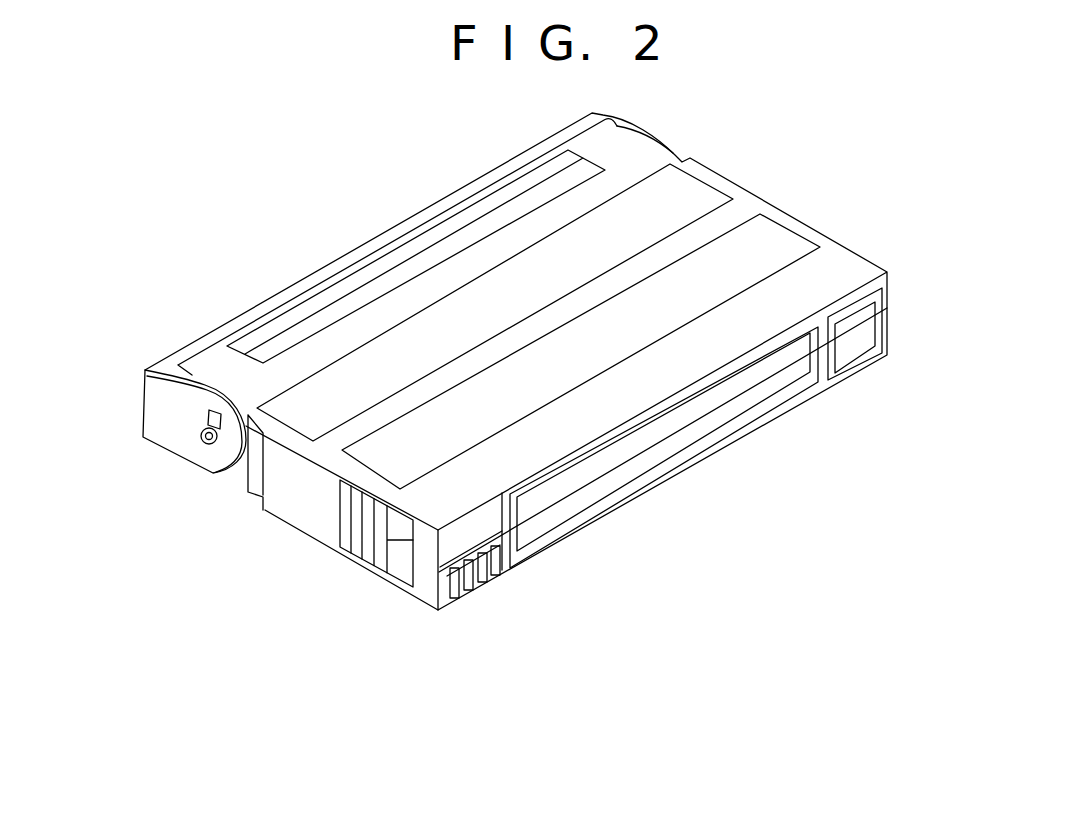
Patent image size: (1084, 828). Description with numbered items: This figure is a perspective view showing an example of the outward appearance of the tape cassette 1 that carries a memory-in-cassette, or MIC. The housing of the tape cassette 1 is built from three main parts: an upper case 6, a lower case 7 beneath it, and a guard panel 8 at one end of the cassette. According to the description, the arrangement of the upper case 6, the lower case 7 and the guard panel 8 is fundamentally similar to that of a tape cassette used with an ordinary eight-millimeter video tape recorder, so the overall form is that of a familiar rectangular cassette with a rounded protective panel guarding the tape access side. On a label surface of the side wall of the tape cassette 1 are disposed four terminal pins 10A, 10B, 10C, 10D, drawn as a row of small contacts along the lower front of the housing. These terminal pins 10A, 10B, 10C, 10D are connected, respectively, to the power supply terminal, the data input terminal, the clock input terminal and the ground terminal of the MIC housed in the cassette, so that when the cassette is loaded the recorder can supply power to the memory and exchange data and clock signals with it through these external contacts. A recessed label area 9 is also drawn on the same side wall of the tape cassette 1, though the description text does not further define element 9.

The tape cassette 1 is at (344, 214).
The upper case 6 is at (280, 457).
The lower case 7 is at (313, 520).
The guard panel 8 is at (178, 357).
The label window 9 is at (730, 421).
The terminal pin 10A is at (455, 602).
The terminal pin 10B is at (468, 590).
The terminal pin 10C is at (482, 583).
The terminal pin 10D is at (497, 577).